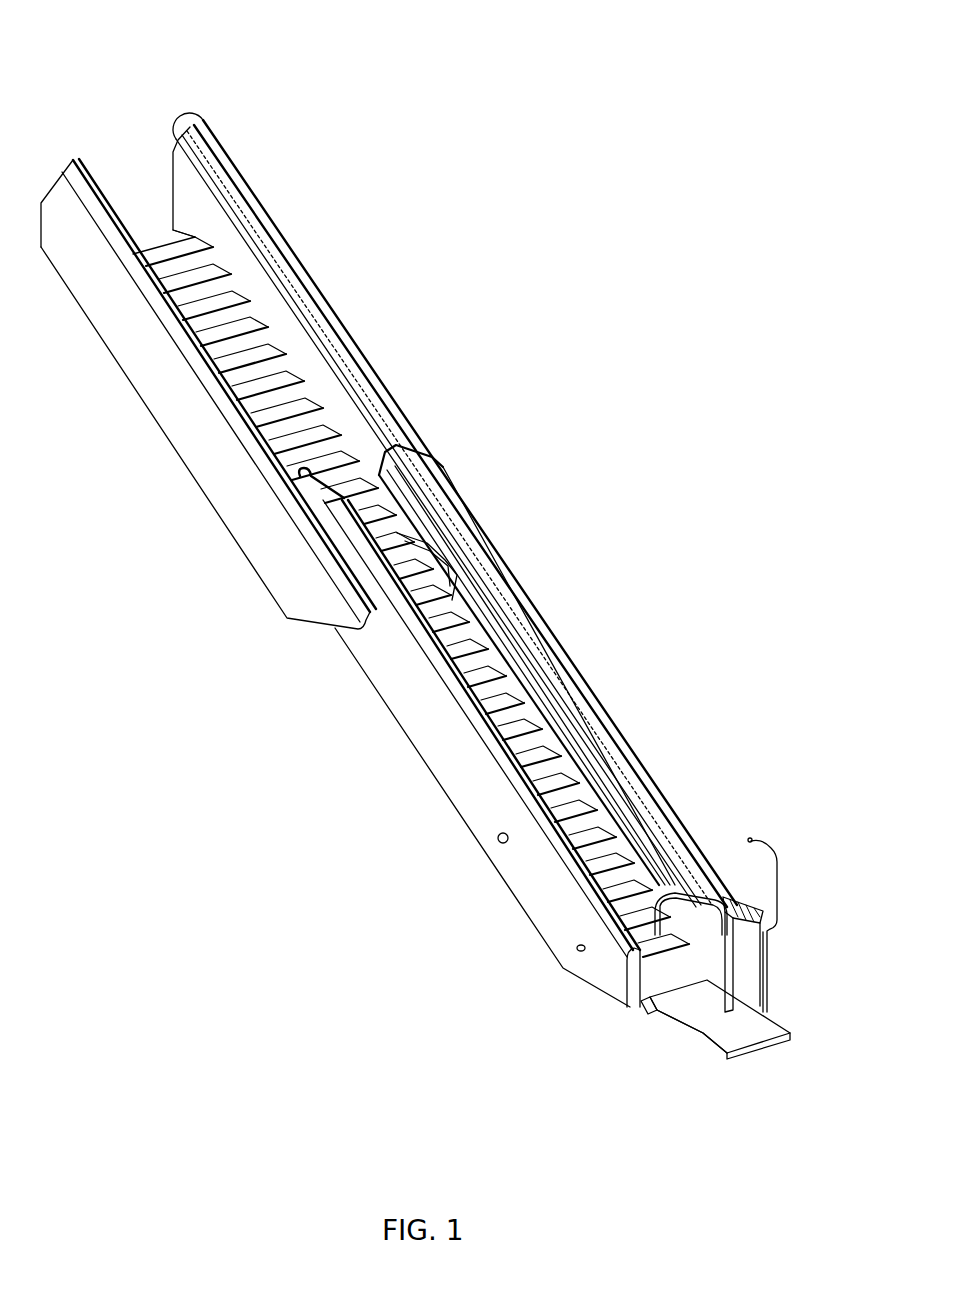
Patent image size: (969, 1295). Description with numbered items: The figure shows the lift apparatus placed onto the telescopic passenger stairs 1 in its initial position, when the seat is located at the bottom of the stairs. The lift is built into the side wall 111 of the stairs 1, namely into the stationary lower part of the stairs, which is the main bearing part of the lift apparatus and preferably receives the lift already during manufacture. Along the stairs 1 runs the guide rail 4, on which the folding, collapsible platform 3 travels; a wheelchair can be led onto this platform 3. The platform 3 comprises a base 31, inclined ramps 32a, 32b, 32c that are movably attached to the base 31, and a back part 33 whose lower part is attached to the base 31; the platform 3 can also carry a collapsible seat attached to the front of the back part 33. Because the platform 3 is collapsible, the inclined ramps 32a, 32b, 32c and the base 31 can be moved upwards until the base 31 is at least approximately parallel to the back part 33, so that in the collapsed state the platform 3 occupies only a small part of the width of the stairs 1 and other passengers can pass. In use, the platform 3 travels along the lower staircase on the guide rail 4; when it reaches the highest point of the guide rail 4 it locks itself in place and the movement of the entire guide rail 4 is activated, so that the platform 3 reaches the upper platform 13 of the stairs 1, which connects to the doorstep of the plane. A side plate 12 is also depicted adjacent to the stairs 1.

The telescopic passenger stairs 1 is at (232, 693).
The side wall 111 is at (588, 677).
The back plate 12 is at (174, 448).
The upper platform 13 is at (150, 232).
The guide rail 4 is at (450, 513).
The platform 3 is at (677, 953).
The base 31 is at (727, 1012).
The inclined ramp 32a is at (763, 1047).
The inclined ramp 32b is at (638, 1010).
The inclined ramp 32c is at (697, 1043).
The back part 33 is at (777, 957).